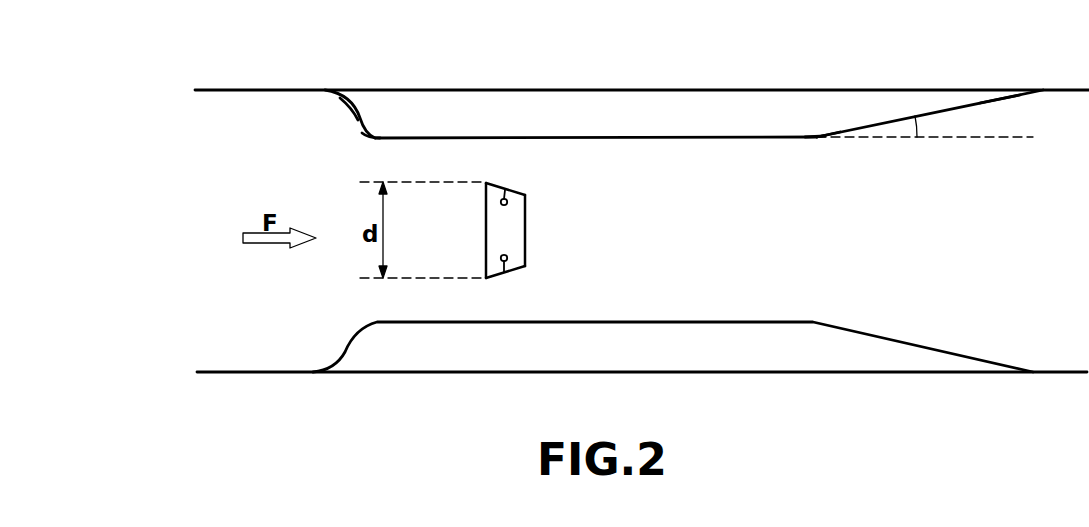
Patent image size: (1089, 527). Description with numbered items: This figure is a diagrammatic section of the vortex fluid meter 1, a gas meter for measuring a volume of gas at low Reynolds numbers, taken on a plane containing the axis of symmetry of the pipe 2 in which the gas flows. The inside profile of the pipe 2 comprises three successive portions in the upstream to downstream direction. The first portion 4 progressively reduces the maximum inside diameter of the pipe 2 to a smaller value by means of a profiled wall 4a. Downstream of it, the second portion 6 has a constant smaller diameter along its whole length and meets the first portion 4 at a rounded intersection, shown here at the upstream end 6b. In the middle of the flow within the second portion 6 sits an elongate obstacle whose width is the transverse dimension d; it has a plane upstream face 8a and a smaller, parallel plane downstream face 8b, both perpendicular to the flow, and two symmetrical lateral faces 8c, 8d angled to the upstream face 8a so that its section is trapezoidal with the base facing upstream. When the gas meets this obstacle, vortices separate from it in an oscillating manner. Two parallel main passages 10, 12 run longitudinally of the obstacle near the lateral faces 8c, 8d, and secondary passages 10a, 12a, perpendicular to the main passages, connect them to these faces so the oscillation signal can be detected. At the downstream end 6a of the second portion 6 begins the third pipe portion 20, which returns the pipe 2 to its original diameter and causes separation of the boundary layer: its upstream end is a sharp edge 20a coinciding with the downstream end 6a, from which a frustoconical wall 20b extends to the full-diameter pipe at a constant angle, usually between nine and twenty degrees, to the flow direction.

The vortex fluid meter 1 is at (303, 68).
The pipe 2 is at (532, 88).
The first portion 4 is at (354, 102).
The profiled wall 4a is at (345, 112).
The second portion 6 is at (584, 137).
The downstream end of the second pipe portion 6a is at (812, 137).
The upstream end of flat surface 6b is at (366, 140).
The upstream face 8a is at (486, 222).
The downstream face 8b is at (526, 228).
The lateral face 8c is at (512, 193).
The lateral face 8d is at (513, 271).
The main passage 10 is at (498, 256).
The secondary passage 10a is at (504, 272).
The main passage 12 is at (509, 204).
The secondary passage 12a is at (504, 190).
The third pipe portion 20 is at (937, 100).
The sharp edge 20a is at (812, 137).
The frustoconical wall 20b is at (993, 100).